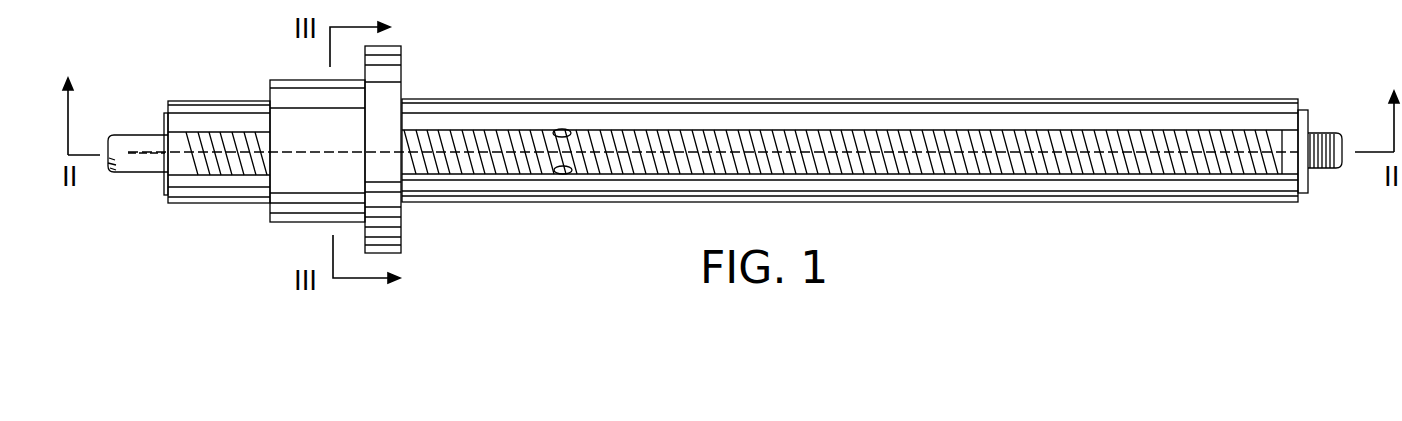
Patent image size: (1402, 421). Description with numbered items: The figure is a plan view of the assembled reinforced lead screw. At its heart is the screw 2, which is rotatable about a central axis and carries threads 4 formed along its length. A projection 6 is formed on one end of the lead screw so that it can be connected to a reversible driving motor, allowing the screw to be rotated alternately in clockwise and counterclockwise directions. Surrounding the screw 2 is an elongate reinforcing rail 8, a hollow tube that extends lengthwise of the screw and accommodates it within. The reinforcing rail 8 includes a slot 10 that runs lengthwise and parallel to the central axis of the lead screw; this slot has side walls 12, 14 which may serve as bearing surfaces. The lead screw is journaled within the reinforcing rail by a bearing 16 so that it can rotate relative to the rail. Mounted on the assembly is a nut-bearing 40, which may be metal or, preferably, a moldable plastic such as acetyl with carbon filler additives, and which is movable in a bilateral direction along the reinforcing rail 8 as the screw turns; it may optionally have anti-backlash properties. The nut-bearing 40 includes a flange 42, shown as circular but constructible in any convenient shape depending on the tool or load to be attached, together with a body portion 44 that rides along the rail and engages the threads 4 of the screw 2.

The screw 2 is at (1005, 140).
The threads 4 is at (652, 128).
The projection 6 is at (138, 135).
The reinforcing rail 8 is at (1132, 100).
The slot 10 is at (210, 133).
The side wall 12 is at (555, 128).
The side wall 14 is at (553, 175).
The bearing 16 is at (1288, 165).
The nut-bearing 40 is at (404, 63).
The flange 42 is at (388, 45).
The body portion 44 is at (336, 145).